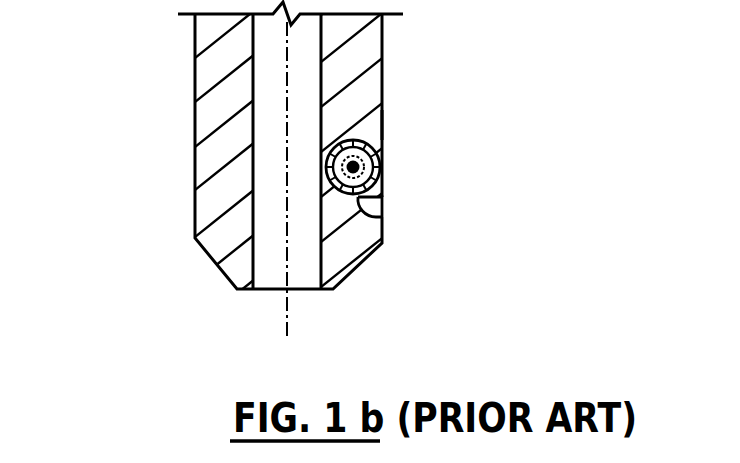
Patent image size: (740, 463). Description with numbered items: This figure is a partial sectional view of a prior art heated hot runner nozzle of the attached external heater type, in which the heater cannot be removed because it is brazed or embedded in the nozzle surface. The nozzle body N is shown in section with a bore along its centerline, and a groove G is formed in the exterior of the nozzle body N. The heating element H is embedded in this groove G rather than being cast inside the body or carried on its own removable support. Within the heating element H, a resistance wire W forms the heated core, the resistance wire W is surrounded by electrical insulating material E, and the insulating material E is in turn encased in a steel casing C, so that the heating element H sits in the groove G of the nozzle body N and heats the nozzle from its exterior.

The nozzle body N is at (210, 143).
The heating element H is at (416, 124).
The electrical insulating material E is at (378, 144).
The resistance wire W is at (365, 167).
The steel casing C is at (382, 216).
The groove G is at (317, 188).